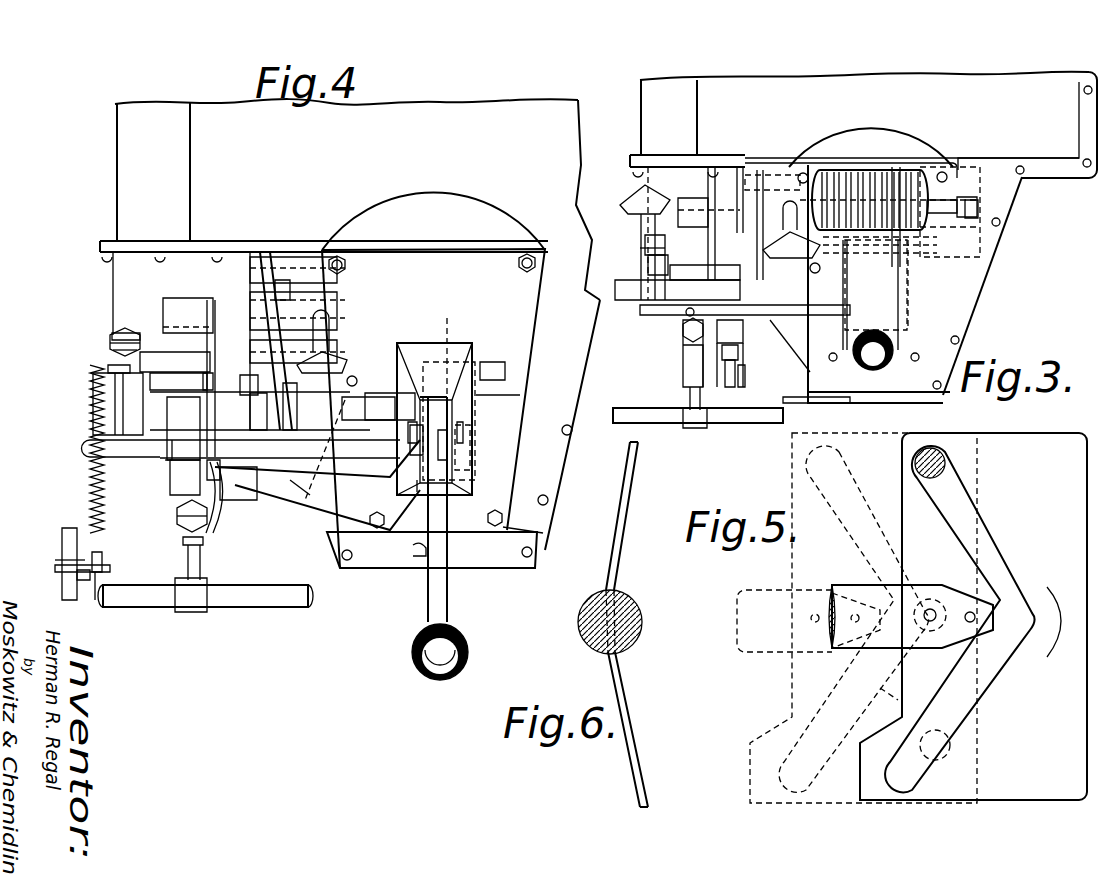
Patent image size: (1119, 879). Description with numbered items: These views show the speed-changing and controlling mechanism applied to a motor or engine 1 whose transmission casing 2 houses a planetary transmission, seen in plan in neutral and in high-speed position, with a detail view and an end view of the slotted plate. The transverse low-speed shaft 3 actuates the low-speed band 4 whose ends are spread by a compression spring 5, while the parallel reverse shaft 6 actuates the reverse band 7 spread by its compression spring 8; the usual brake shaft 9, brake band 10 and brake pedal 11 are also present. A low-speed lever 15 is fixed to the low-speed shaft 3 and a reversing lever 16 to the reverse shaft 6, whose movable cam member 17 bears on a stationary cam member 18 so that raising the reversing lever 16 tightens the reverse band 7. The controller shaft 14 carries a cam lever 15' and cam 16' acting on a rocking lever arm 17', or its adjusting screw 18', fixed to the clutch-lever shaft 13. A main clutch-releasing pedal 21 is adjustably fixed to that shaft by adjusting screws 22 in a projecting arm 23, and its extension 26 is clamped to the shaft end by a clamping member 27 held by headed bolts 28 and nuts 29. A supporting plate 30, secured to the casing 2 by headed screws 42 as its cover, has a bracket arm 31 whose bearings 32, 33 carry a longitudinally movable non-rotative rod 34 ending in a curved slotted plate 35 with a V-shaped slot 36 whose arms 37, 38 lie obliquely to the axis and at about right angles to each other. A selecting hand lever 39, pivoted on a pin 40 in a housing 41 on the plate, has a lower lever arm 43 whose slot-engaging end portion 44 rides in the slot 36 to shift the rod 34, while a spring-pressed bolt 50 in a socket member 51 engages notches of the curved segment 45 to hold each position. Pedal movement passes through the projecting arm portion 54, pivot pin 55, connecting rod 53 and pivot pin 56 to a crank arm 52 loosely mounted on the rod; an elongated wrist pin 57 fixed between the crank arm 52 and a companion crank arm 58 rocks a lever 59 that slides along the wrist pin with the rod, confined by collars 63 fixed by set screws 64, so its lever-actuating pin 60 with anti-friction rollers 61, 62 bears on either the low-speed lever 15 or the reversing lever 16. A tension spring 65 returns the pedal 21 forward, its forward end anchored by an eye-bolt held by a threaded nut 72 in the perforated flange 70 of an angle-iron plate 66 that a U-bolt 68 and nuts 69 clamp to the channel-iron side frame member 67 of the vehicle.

In FIG. 4, the motor or engine 1 is at (217, 183).
In FIG. 3, the motor or engine 1 is at (1050, 135).
In FIG. 4, the transmission casing 2 is at (545, 440).
In FIG. 3, the transmission casing 2 is at (975, 294).
In FIG. 4, the low-speed shaft 3 is at (225, 295).
In FIG. 3, the low-speed shaft 3 is at (677, 170).
In FIG. 3, the low-speed band 4 is at (960, 200).
In FIG. 3, the compression spring 5 is at (978, 207).
In FIG. 4, the reverse shaft 6 is at (238, 262).
In FIG. 3, the reverse shaft 6 is at (730, 180).
In FIG. 4, the reverse band 7 is at (215, 380).
In FIG. 3, the reverse band 7 is at (928, 200).
In FIG. 3, the compression spring 8 is at (850, 190).
In FIG. 4, the brake shaft 9 is at (250, 345).
In FIG. 3, the brake shaft 9 is at (900, 268).
In FIG. 3, the brake band 10 is at (940, 258).
In FIG. 4, the brake pedal 11 is at (327, 325).
In FIG. 3, the brake pedal 11 is at (795, 270).
In FIG. 4, the high-speed or clutch-lever shaft 13 is at (280, 503).
In FIG. 4, the controller shaft 14 is at (262, 600).
In FIG. 3, the controller shaft 14 is at (745, 423).
In FIG. 4, the low-speed lever 15 is at (98, 344).
In FIG. 3, the low-speed lever 15 is at (633, 249).
In FIG. 4, the cam lever 15' is at (212, 576).
In FIG. 3, the cam lever 15' is at (681, 416).
In FIG. 4, the reversing lever 16 is at (332, 235).
In FIG. 3, the reversing lever 16 is at (729, 257).
In FIG. 4, the cam 16' is at (213, 518).
In FIG. 4, the movable cam member 17 is at (307, 307).
In FIG. 3, the movable cam member 17 is at (732, 248).
In FIG. 4, the rocking lever arm 17' is at (243, 497).
In FIG. 4, the stationary cam member 18 is at (308, 270).
In FIG. 3, the stationary cam member 18 is at (731, 256).
In FIG. 4, the adjusting screw 18' is at (237, 548).
In FIG. 4, the clutch-releasing pedal 21 is at (95, 438).
In FIG. 3, the clutch-releasing pedal 21 is at (628, 190).
In FIG. 4, the adjusting screws 22 is at (172, 485).
In FIG. 4, the projecting arm 23 is at (196, 470).
In FIG. 4, the extension 26 is at (337, 350).
In FIG. 3, the extension 26 is at (683, 335).
In FIG. 4, the clamping member 27 is at (257, 485).
In FIG. 3, the clamping member 27 is at (740, 350).
In FIG. 4, the headed bolts 28 is at (300, 462).
In FIG. 3, the headed bolts 28 is at (725, 365).
In FIG. 4, the threaded nuts 29 is at (305, 495).
In FIG. 3, the threaded nuts 29 is at (740, 385).
In FIG. 4, the supporting plate 30 is at (520, 358).
In FIG. 3, the supporting plate 30 is at (905, 312).
In FIG. 4, the bracket arm 31 is at (170, 480).
In FIG. 4, the bearing 32 is at (175, 452).
In FIG. 4, the bearing 33 is at (378, 413).
In FIG. 4, the longitudinally movable non-rotative shaft 34 is at (345, 400).
In FIG. 3, the longitudinally movable non-rotative shaft 34 is at (622, 300).
In FIG. 5, the longitudinally movable non-rotative shaft 34 is at (762, 595).
In FIG. 6, the longitudinally movable non-rotative shaft 34 is at (585, 615).
In FIG. 5, the slotted plate 35 is at (800, 492).
In FIG. 6, the slotted plate 35 is at (617, 538).
In FIG. 4, the angular slot 36 is at (520, 383).
In FIG. 5, the angular slot 36 is at (1048, 600).
In FIG. 4, the slot arm 37 is at (476, 398).
In FIG. 5, the slot arm 37 is at (1010, 535).
In FIG. 4, the slot arm 38 is at (470, 450).
In FIG. 5, the slot arm 38 is at (897, 692).
In FIG. 4, the selecting lever 39 is at (447, 593).
In FIG. 4, the pivot pin 40 is at (462, 430).
In FIG. 4, the housing 41 is at (420, 440).
In FIG. 4, the securing screws 42 is at (527, 262).
In FIG. 4, the lower lever arm 43 is at (475, 378).
In FIG. 4, the slot-engaging end portion 44 is at (460, 357).
In FIG. 5, the slot-engaging end portion 44 is at (947, 462).
In FIG. 4, the notched segment 45 is at (420, 490).
In FIG. 4, the spring-pressed bolt 50 is at (417, 487).
In FIG. 4, the socket member 51 is at (413, 540).
In FIG. 4, the crank arm 52 is at (93, 385).
In FIG. 3, the crank arm 52 is at (648, 268).
In FIG. 4, the connecting rod 53 is at (110, 375).
In FIG. 3, the connecting rod 53 is at (640, 252).
In FIG. 4, the projecting arm portion 54 is at (113, 337).
In FIG. 4, the pivot pin 55 is at (110, 343).
In FIG. 4, the pivot pin 56 is at (160, 378).
In FIG. 3, the pivot pin 56 is at (700, 275).
In FIG. 4, the wrist pin 57 is at (160, 400).
In FIG. 4, the crank arm member 58 is at (300, 378).
In FIG. 3, the crank arm member 58 is at (805, 258).
In FIG. 4, the rocking lever 59 is at (258, 368).
In FIG. 3, the rocking lever 59 is at (727, 343).
In FIG. 3, the lever-actuating pin 60 is at (692, 198).
In FIG. 4, the anti-friction roller 61 is at (178, 405).
In FIG. 3, the anti-friction roller 61 is at (668, 300).
In FIG. 4, the anti-friction roller 62 is at (370, 397).
In FIG. 3, the anti-friction roller 62 is at (795, 232).
In FIG. 3, the collars 63 is at (675, 340).
In FIG. 3, the set screws 64 is at (690, 305).
In FIG. 4, the tension spring 65 is at (92, 470).
In FIG. 4, the angle iron plate 66 is at (77, 576).
In FIG. 4, the side frame member 67 is at (62, 542).
In FIG. 4, the U-bolt 68 is at (62, 562).
In FIG. 4, the nuts 69 is at (103, 560).
In FIG. 4, the flange 70 is at (110, 570).
In FIG. 4, the threaded nut 72 is at (88, 610).